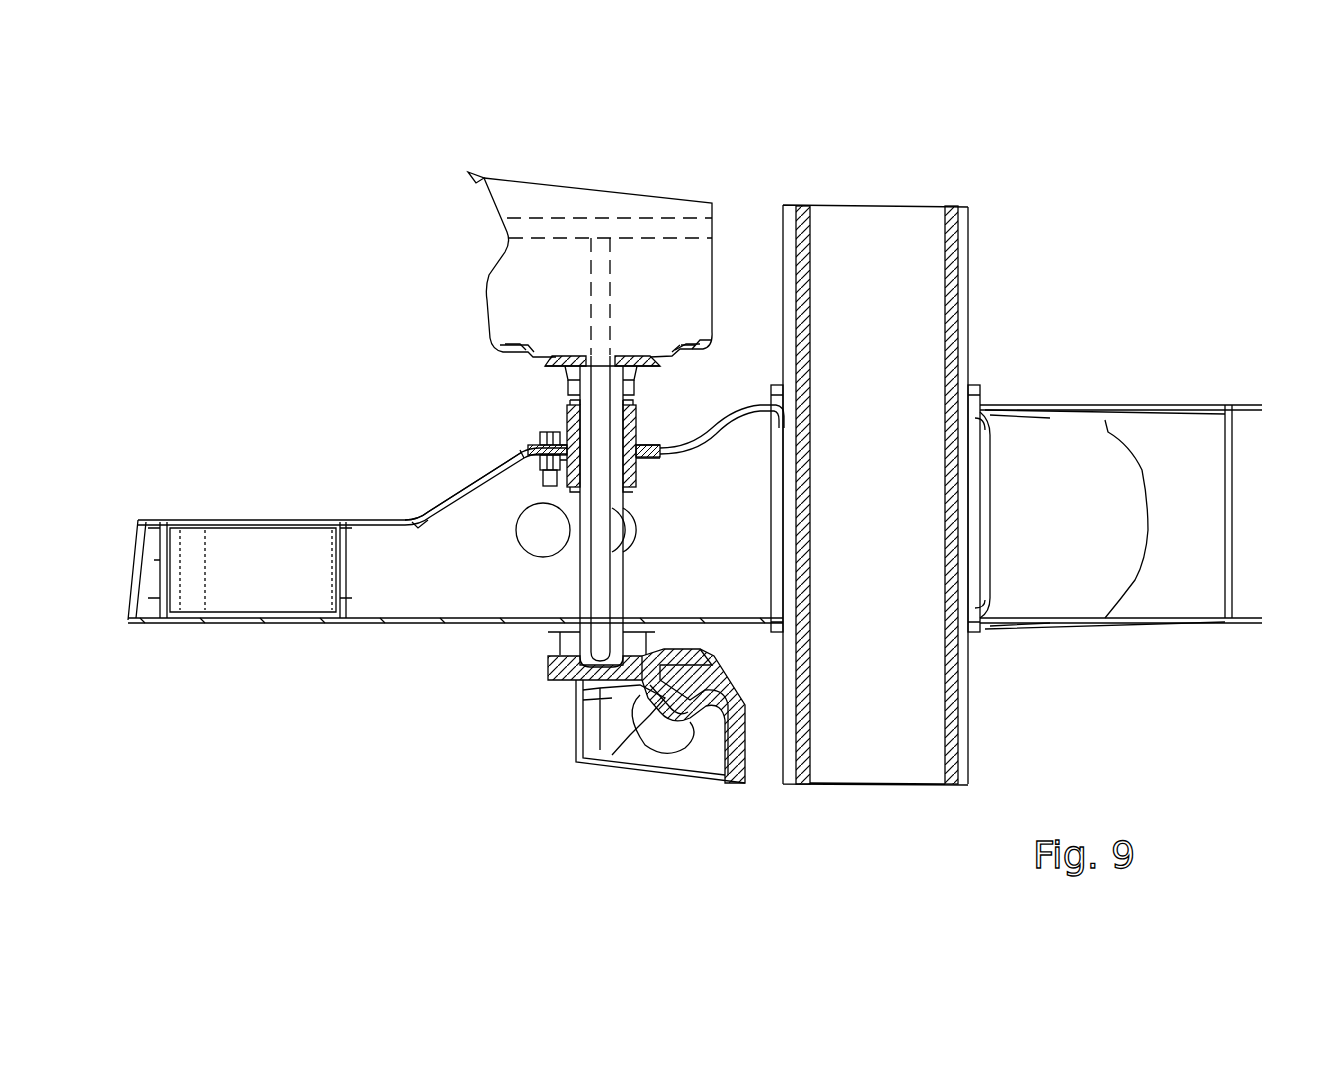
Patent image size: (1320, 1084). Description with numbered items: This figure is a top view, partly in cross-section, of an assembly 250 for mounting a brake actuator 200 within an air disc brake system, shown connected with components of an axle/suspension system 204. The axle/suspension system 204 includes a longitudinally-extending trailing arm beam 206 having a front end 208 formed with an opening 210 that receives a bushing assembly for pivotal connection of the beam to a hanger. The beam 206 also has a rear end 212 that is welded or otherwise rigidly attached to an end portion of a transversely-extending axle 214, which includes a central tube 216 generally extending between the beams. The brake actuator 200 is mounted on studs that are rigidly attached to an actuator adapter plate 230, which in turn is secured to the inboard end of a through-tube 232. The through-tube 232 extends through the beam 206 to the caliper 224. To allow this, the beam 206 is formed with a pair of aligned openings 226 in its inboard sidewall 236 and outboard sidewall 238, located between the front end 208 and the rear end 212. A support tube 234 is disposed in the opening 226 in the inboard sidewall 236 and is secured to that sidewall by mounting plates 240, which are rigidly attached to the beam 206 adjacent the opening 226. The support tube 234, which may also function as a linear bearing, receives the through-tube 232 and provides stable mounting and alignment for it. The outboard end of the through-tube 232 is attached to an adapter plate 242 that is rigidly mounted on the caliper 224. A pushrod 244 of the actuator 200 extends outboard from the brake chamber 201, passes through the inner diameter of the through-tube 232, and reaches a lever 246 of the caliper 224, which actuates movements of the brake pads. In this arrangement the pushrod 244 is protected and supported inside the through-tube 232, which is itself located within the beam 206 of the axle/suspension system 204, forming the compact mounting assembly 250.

The brake actuator 200 is at (724, 218).
The brake chamber 201 is at (506, 252).
The axle/suspension system 204 is at (312, 778).
The trailing arm beam 206 is at (366, 520).
The front end 208 is at (141, 520).
The opening 210 is at (168, 615).
The rear end 212 is at (1188, 405).
The axle 214 is at (972, 284).
The central tube 216 is at (968, 233).
The caliper 224 is at (576, 730).
The openings 226 is at (640, 470).
The actuator adapter plate 230 is at (550, 370).
The through-tube 232 is at (580, 590).
The support tube 234 is at (543, 540).
The inboard sidewall 236 is at (448, 497).
The outboard sidewall 238 is at (357, 623).
The mounting plates 240 is at (540, 480).
The adapter plate 242 is at (560, 652).
The pushrod 244 is at (605, 582).
The lever 246 is at (630, 700).
The mounting assembly 250 is at (528, 434).